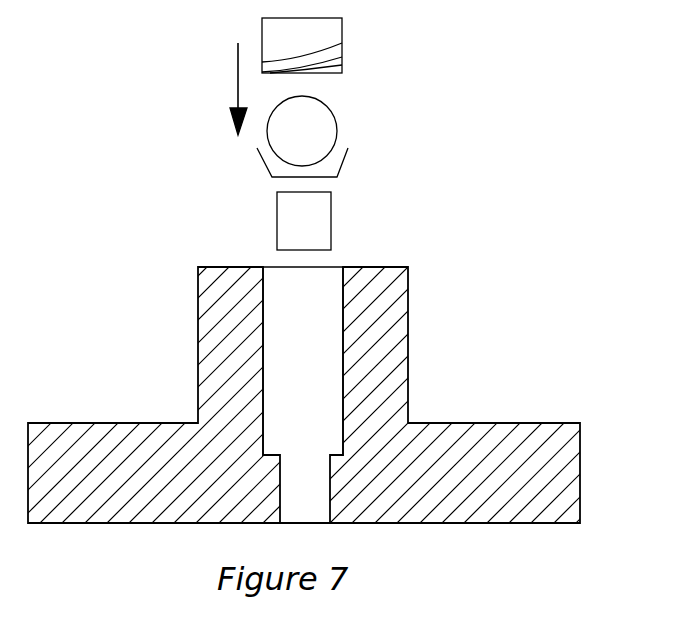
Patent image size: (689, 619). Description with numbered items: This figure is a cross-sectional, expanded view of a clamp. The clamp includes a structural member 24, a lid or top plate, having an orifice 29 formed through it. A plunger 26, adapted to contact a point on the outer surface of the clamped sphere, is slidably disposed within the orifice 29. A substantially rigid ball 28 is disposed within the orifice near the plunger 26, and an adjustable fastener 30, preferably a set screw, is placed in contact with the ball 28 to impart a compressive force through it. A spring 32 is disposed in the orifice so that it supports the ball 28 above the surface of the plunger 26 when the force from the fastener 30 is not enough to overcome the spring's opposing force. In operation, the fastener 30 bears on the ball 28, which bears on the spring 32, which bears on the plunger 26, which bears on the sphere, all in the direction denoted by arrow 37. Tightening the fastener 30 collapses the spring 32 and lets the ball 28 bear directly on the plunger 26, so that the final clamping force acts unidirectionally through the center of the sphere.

The structural member 24 is at (548, 423).
The plunger 26 is at (331, 215).
The ball 28 is at (328, 104).
The orifice 29 is at (345, 343).
The adjustable fastener 30 is at (342, 30).
The spring 32 is at (343, 162).
The arrow 37 is at (234, 87).